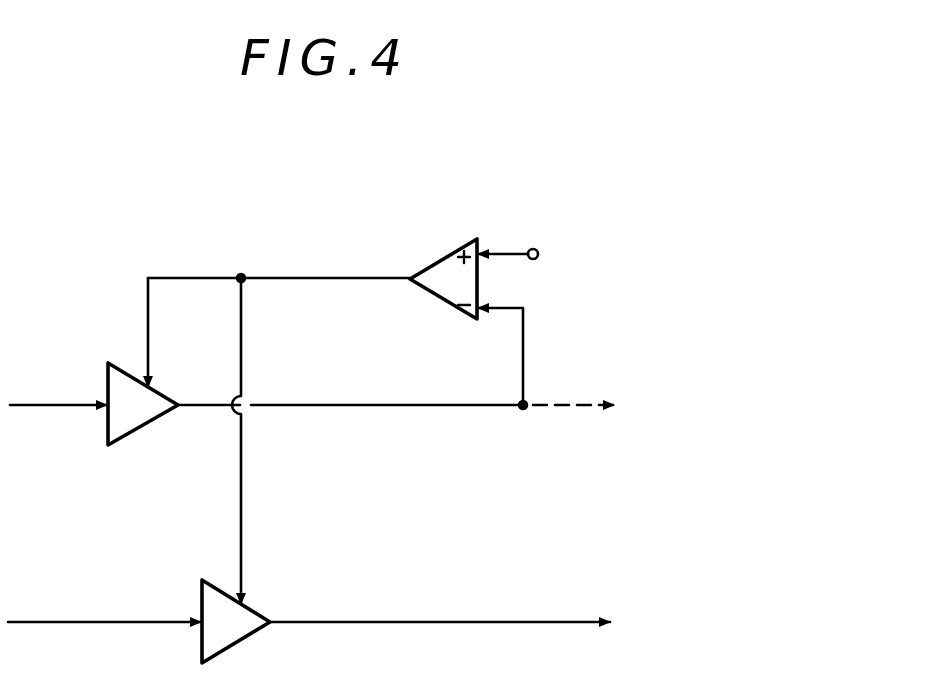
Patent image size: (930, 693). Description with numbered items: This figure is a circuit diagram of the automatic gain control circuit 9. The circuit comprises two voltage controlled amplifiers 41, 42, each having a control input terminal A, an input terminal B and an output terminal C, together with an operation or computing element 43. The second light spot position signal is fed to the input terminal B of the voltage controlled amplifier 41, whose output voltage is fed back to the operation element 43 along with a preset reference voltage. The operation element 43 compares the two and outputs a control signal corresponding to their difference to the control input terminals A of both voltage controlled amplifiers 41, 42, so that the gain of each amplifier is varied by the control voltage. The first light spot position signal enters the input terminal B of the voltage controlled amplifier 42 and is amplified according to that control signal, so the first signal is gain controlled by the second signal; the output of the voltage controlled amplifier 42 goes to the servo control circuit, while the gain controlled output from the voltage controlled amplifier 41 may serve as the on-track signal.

The automatic gain control circuit 9 is at (138, 210).
The voltage controlled amplifier 41 is at (117, 362).
The voltage controlled amplifier 42 is at (201, 584).
The operation element 43 is at (439, 258).